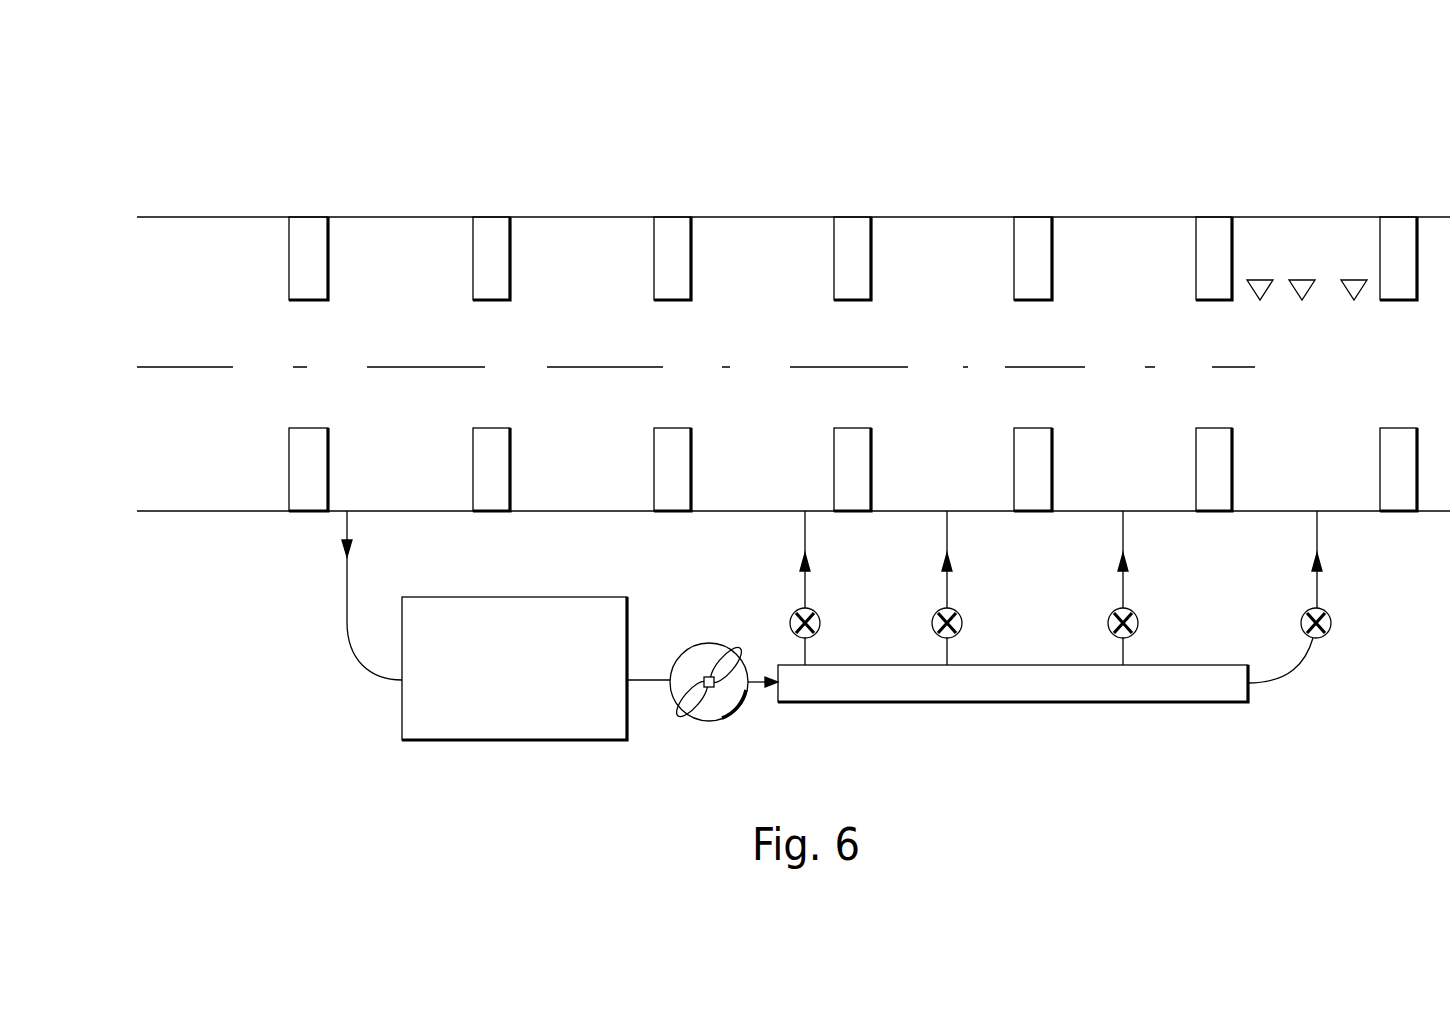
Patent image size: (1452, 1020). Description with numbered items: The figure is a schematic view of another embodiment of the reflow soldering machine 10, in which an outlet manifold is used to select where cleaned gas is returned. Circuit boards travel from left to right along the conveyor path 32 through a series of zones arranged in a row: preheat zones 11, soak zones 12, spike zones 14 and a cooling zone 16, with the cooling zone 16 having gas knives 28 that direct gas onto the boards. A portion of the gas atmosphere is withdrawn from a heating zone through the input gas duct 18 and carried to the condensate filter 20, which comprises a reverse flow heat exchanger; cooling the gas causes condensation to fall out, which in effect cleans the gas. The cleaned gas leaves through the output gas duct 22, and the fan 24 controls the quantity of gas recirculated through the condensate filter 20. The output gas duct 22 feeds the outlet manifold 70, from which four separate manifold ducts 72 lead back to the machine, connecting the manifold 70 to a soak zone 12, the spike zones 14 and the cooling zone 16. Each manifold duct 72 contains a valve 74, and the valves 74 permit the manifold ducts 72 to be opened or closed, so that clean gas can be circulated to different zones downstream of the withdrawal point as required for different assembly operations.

The reflow soldering machine 10 is at (797, 135).
The preheat zone 11 is at (193, 262).
The soak zone 12 is at (569, 260).
The spike zone 14 is at (941, 252).
The cooling zone 16 is at (1319, 258).
The input gas duct 18 is at (347, 582).
The condensate filter 20 is at (508, 740).
The output gas duct 22 is at (647, 680).
The fan 24 is at (710, 643).
The gas knives 28 is at (1354, 300).
The conveyor path 32 is at (143, 367).
The outlet manifold 70 is at (1010, 702).
The manifold ducts 72 is at (800, 571).
The valves 74 is at (821, 620).